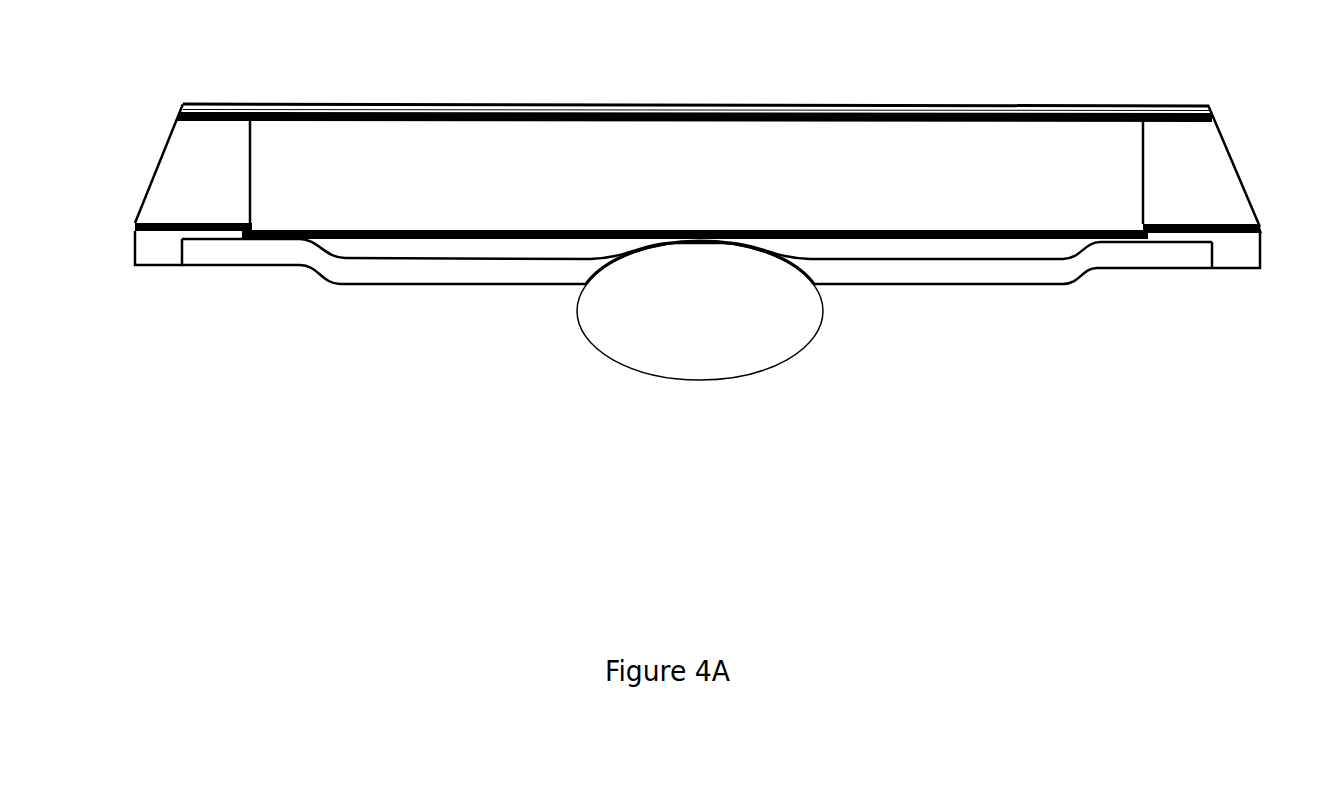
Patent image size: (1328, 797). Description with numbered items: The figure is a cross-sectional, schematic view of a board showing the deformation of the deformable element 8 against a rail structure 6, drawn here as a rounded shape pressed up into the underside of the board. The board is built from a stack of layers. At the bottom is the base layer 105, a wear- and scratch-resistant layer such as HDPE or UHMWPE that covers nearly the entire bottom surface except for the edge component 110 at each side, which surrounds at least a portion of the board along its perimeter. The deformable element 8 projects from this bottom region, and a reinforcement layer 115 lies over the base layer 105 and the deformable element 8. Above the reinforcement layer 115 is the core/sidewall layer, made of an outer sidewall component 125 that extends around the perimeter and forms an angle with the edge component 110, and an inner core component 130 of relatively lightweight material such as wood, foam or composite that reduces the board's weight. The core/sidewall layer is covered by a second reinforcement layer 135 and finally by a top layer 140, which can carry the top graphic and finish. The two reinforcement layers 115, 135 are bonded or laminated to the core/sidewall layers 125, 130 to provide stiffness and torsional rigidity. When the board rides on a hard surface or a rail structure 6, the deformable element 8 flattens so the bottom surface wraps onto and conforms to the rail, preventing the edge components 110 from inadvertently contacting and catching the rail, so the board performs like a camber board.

The rail structure 6 is at (625, 335).
The deformable element 8 is at (405, 252).
The base layer 105 is at (868, 280).
The edge component 110 is at (155, 253).
The reinforcement layer 115 is at (132, 227).
The outer sidewall component 125 is at (193, 172).
The inner core component 130 is at (532, 163).
The second reinforcement layer 135 is at (178, 117).
The top layer 140 is at (867, 107).